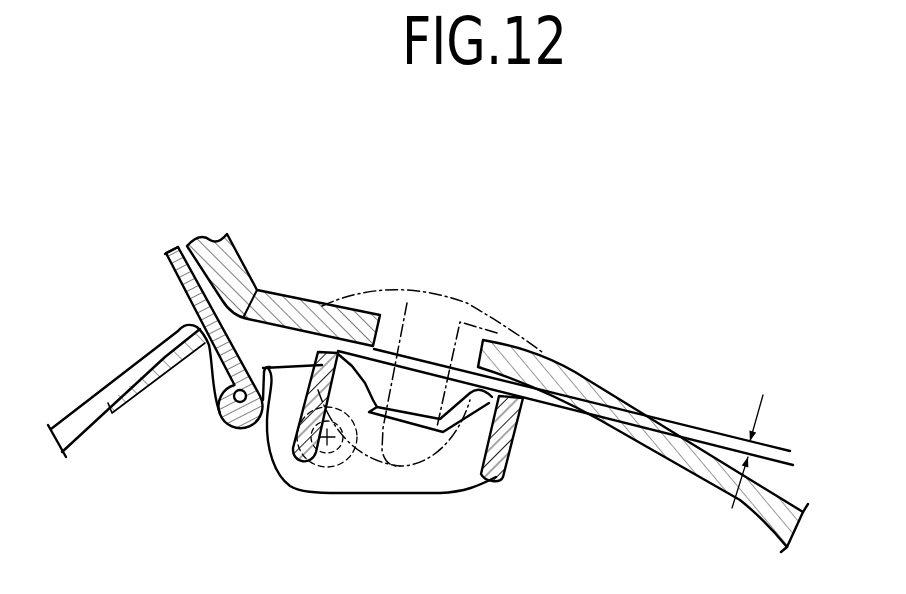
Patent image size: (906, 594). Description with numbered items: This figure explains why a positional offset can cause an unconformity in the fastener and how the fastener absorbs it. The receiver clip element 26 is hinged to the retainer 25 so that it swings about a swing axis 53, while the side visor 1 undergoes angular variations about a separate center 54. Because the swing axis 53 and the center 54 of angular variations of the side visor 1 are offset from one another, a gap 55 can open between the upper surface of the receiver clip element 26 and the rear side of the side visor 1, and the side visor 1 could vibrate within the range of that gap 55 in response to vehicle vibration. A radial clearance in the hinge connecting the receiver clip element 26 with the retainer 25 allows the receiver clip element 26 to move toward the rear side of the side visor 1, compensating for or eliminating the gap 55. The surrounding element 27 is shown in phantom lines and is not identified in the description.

The side visor 1 is at (602, 372).
The retainer 25 is at (256, 474).
The receiver clip element 26 is at (514, 471).
The weather strip 27 is at (470, 295).
The swing axis 53 is at (328, 440).
The center of angular variations 54 is at (258, 290).
The gap 55 is at (747, 450).